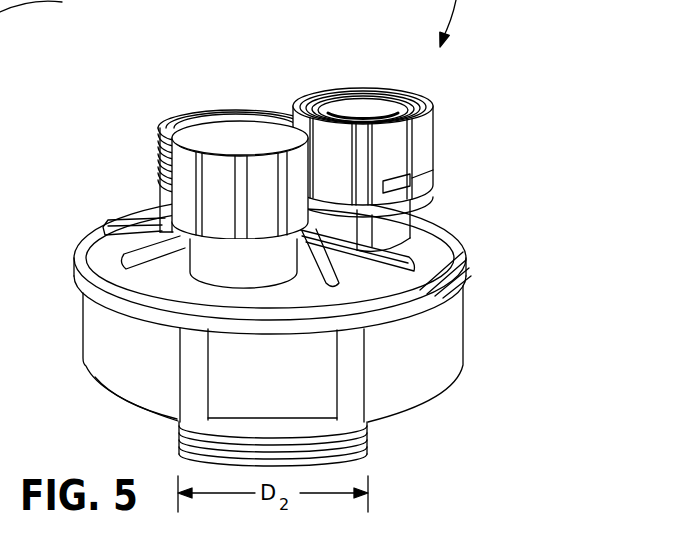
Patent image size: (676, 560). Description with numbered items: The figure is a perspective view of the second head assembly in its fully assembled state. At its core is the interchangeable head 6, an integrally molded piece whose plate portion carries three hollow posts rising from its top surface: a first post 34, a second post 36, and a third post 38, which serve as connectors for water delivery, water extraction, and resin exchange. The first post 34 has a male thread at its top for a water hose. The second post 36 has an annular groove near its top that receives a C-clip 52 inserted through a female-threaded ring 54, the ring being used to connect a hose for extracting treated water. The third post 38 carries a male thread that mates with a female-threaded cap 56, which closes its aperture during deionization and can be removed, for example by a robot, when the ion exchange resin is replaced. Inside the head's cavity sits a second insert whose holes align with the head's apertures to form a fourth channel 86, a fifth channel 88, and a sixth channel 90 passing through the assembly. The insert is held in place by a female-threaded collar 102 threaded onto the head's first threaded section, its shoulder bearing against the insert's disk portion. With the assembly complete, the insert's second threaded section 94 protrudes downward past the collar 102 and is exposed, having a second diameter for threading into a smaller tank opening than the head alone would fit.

The interchangeable head 6 is at (447, 241).
The first post 34 is at (165, 210).
The second post 36 is at (405, 225).
The third post 38 is at (207, 268).
The C-clip 52 is at (402, 184).
The female-threaded ring 54 is at (423, 131).
The female-threaded cap 56 is at (186, 197).
The fourth channel 86 is at (208, 113).
The fifth channel 88 is at (378, 95).
The sixth channel 90 is at (245, 140).
The second threaded section 94 is at (372, 430).
The female-threaded collar 102 is at (447, 362).